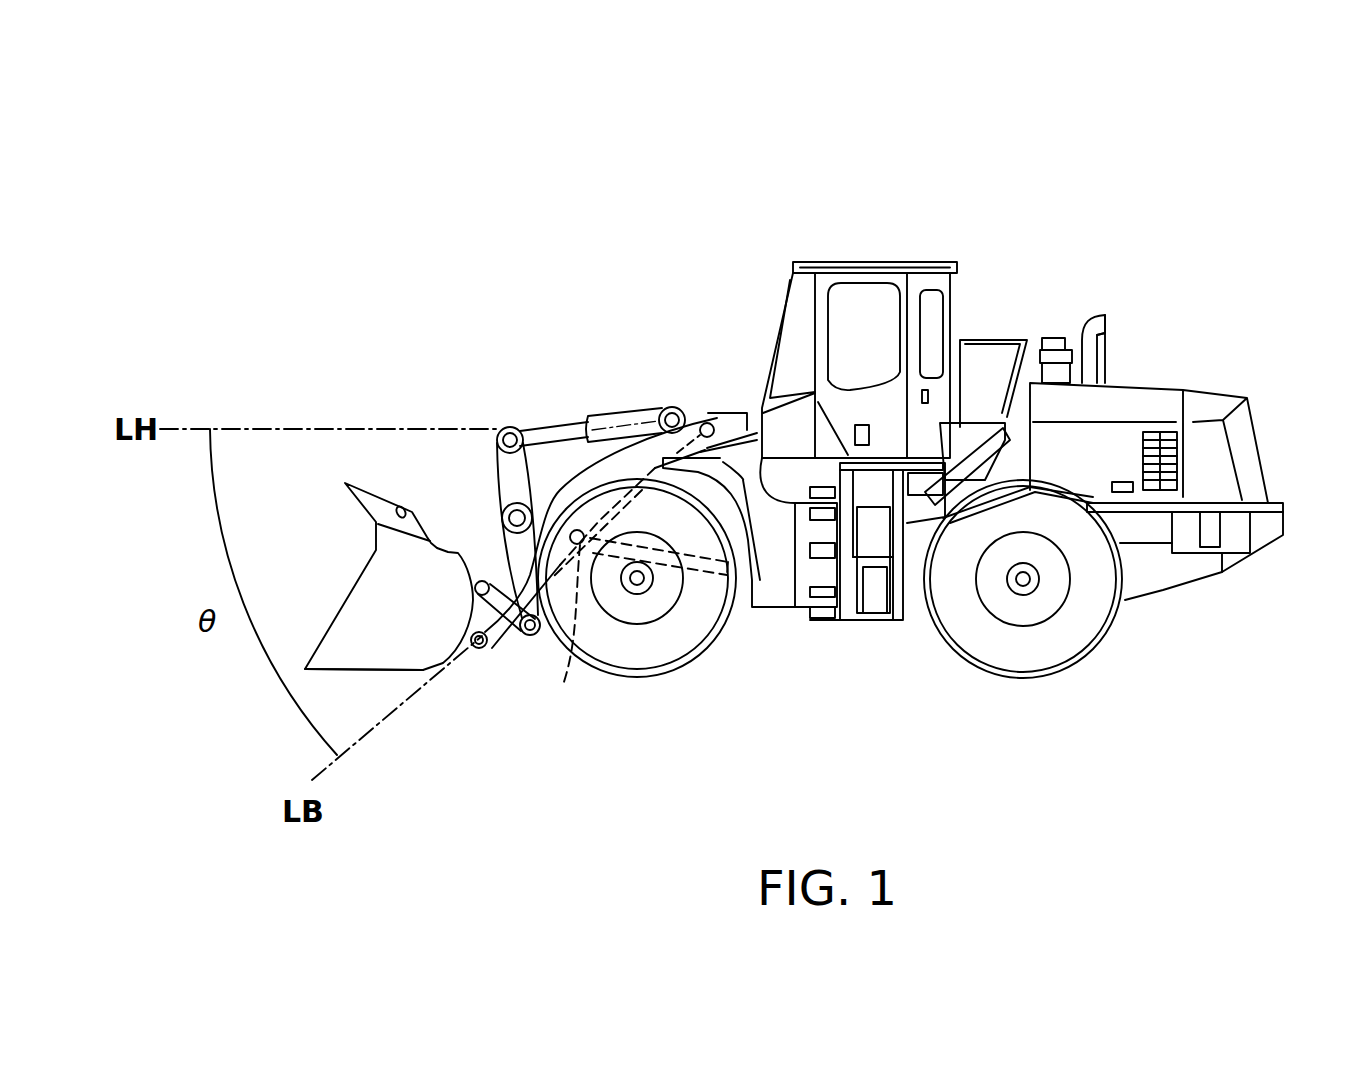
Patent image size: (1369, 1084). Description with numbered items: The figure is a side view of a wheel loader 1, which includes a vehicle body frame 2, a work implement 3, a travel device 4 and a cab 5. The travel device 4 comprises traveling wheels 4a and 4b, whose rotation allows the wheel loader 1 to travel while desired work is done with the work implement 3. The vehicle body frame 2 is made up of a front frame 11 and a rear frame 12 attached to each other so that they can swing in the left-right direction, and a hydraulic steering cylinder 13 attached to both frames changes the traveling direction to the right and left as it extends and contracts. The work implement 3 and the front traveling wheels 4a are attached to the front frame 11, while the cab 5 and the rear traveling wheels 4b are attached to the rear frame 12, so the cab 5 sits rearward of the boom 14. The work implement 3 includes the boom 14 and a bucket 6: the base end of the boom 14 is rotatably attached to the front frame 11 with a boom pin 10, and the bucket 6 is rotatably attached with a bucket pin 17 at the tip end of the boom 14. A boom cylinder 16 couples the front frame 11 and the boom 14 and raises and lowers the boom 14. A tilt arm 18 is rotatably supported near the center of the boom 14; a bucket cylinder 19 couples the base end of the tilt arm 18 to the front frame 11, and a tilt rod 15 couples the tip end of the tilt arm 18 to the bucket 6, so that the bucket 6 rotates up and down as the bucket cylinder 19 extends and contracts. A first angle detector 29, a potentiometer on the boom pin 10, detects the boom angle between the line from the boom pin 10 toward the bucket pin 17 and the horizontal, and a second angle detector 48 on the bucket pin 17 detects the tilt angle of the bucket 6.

The wheel loader 1 is at (1083, 178).
The vehicle body frame 2 is at (855, 637).
The work implement 3 is at (388, 478).
The travel device 4 is at (1041, 618).
The traveling wheels 4a is at (647, 658).
The traveling wheels 4b is at (1037, 660).
The cab 5 is at (918, 262).
The bucket 6 is at (360, 602).
The boom pin 10 is at (708, 380).
The first angle detector 29 is at (707, 423).
The front frame 11 is at (752, 597).
The rear frame 12 is at (908, 612).
The steering cylinder 13 is at (820, 553).
The boom 14 is at (547, 517).
The tilt rod 15 is at (505, 640).
The boom cylinder 16 is at (631, 610).
The bucket pin 17 is at (450, 715).
The second angle detector 48 is at (478, 648).
The tilt arm 18 is at (497, 490).
The bucket cylinder 19 is at (633, 418).